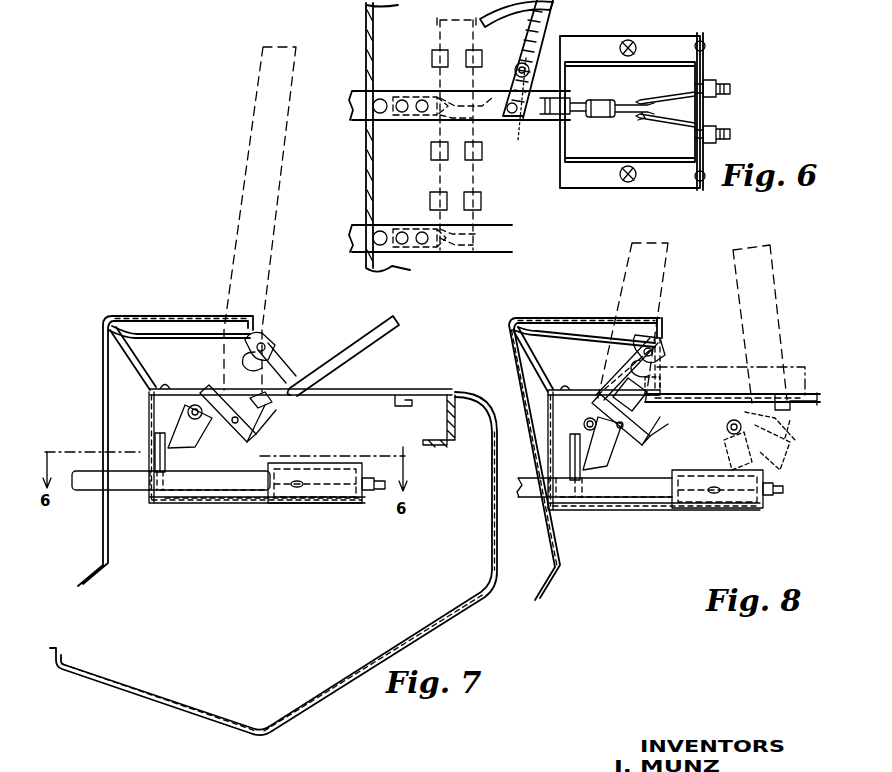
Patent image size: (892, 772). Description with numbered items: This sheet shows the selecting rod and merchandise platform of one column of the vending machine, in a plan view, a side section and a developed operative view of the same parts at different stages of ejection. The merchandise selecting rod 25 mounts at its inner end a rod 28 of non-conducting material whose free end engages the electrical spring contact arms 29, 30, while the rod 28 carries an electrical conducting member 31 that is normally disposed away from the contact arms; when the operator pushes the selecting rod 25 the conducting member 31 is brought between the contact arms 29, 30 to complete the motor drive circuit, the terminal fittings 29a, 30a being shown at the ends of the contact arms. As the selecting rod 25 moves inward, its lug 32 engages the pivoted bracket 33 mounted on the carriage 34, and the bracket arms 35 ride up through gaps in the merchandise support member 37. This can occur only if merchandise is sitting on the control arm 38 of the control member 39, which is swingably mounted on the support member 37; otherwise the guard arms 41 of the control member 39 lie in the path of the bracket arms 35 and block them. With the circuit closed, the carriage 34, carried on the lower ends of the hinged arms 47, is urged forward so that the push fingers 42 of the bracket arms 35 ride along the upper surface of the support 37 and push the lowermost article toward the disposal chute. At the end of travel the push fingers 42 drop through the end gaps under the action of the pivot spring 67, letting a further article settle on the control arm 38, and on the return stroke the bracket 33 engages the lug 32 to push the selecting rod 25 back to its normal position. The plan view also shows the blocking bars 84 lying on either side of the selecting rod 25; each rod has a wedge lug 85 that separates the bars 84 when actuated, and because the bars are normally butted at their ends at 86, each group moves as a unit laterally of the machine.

In FIG. 6, the merchandise selecting rod 25 is at (366, 92).
In FIG. 7, the merchandise selecting rod 25 is at (92, 492).
In FIG. 8, the merchandise selecting rod 25 is at (526, 495).
In FIG. 6, the rod of non-conducting material 28 is at (630, 118).
In FIG. 6, the electrical spring contact arm 29 is at (672, 98).
In FIG. 6, the upper terminal screw 29a is at (730, 84).
In FIG. 6, the electrical spring contact arm 30 is at (676, 126).
In FIG. 6, the lower terminal screw 30a is at (730, 136).
In FIG. 6, the electrical conducting member 31 is at (604, 100).
In FIG. 7, the electrical conducting member 31 is at (290, 504).
In FIG. 8, the electrical conducting member 31 is at (710, 508).
In FIG. 7, the lug 32 is at (155, 445).
In FIG. 8, the lug 32 is at (570, 456).
In FIG. 7, the pivoted bracket 33 is at (203, 437).
In FIG. 8, the pivoted bracket 33 is at (606, 448).
In FIG. 7, the carriage 34 is at (266, 420).
In FIG. 8, the carriage 34 is at (662, 426).
In FIG. 7, the bracket arms 35 is at (220, 398).
In FIG. 8, the bracket arms 35 is at (612, 398).
In FIG. 7, the merchandise support member 37 is at (392, 389).
In FIG. 8, the merchandise support member 37 is at (806, 393).
In FIG. 7, the control arm 38 is at (352, 342).
In FIG. 8, the control arm 38 is at (694, 403).
In FIG. 7, the control member 39 is at (262, 342).
In FIG. 8, the control member 39 is at (630, 340).
In FIG. 7, the guard arms 41 is at (272, 368).
In FIG. 8, the guard arms 41 is at (600, 366).
In FIG. 7, the push fingers 42 is at (272, 400).
In FIG. 8, the push fingers 42 is at (660, 382).
In FIG. 7, the hinged arms 47 is at (256, 173).
In FIG. 8, the hinged arms 47 is at (735, 275).
In FIG. 7, the pivot spring 67 is at (153, 395).
In FIG. 8, the pivot spring 67 is at (548, 393).
In FIG. 6, the blocking bars 84 is at (440, 30).
In FIG. 7, the blocking bars 84 is at (208, 503).
In FIG. 8, the blocking bars 84 is at (620, 508).
In FIG. 6, the wedge lug 85 is at (416, 97).
In FIG. 7, the wedge lug 85 is at (180, 503).
In FIG. 8, the wedge lug 85 is at (592, 508).
In FIG. 6, the butted ends 86 is at (494, 102).